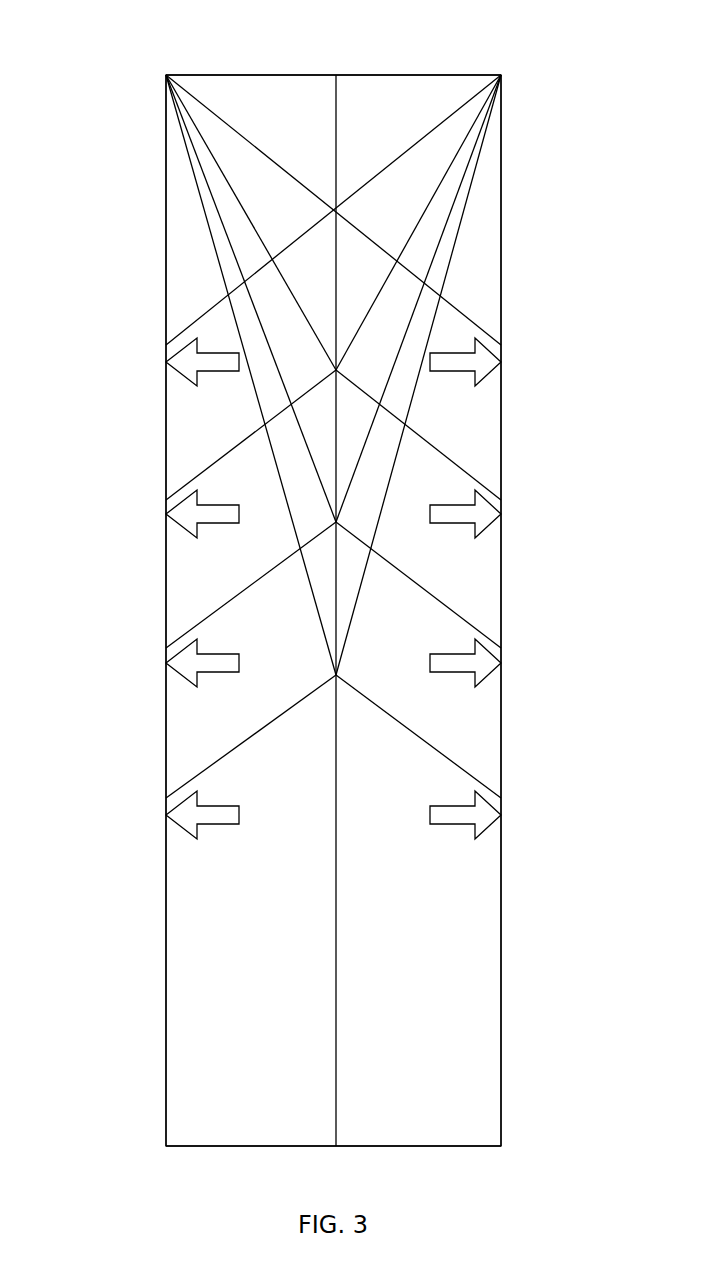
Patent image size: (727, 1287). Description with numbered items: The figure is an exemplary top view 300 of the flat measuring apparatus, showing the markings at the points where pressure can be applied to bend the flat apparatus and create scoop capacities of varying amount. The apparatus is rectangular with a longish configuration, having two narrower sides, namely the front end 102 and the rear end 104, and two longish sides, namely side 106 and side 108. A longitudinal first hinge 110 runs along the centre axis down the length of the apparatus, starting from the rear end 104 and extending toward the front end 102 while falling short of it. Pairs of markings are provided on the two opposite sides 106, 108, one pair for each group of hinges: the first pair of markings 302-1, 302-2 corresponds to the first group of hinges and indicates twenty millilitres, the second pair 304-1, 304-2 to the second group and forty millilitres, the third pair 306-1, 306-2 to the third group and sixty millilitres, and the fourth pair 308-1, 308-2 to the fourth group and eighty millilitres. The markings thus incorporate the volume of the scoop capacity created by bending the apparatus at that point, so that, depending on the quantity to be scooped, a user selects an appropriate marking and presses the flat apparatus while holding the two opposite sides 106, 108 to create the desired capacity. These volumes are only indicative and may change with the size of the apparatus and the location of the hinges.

The top view 300 is at (115, 40).
The front end 102 is at (337, 73).
The rear end 104 is at (432, 1149).
The side 106 is at (503, 1052).
The side 108 is at (164, 1046).
The first hinge 110 is at (338, 994).
The marking 302-1 is at (502, 362).
The marking 302-2 is at (165, 362).
The marking 304-1 is at (502, 514).
The marking 304-2 is at (165, 514).
The marking 306-1 is at (502, 663).
The marking 306-2 is at (165, 663).
The marking 308-1 is at (502, 815).
The marking 308-2 is at (165, 815).